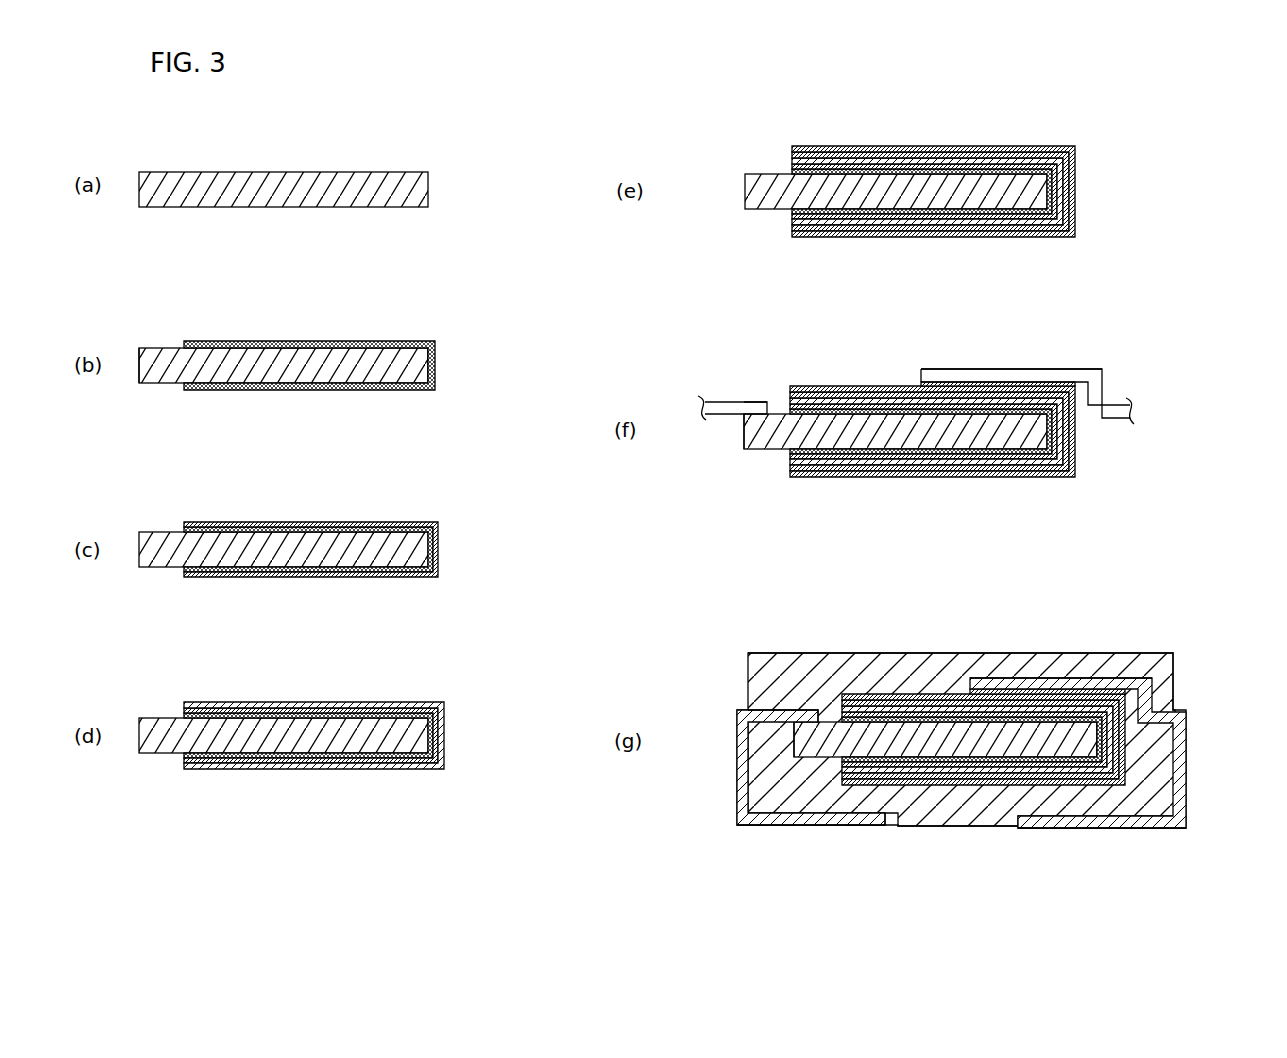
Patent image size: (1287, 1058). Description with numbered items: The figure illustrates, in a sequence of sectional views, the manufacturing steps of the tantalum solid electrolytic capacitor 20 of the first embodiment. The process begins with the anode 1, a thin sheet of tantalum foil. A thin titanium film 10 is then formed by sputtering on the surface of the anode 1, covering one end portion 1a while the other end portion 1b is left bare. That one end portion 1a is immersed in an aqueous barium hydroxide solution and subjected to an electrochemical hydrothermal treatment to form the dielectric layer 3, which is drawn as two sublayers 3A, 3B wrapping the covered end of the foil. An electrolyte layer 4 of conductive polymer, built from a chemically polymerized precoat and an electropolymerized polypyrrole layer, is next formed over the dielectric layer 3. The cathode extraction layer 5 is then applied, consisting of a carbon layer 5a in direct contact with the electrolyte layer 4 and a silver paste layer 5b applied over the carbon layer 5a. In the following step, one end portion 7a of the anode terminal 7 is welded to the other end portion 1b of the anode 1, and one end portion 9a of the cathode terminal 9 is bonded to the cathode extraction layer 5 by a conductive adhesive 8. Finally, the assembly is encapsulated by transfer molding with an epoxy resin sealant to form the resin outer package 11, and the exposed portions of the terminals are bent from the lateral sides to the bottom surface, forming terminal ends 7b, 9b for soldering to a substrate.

The anode 1 is at (418, 186).
The one end portion of the anode 1a is at (368, 360).
The other end portion of the anode 1b is at (145, 353).
The thin titanium film 10 is at (323, 347).
The dielectric layer 3 is at (645, 435).
The first solid electrolyte layer 3A is at (255, 532).
The second solid electrolyte layer 3B is at (320, 522).
The electrolyte layer 4 is at (345, 703).
The cathode extraction layer 5 is at (950, 490).
The carbon layer 5a is at (1000, 155).
The silver paste layer 5b is at (1067, 148).
The anode terminal 7 is at (715, 407).
The one end portion of the anode terminal 7a is at (752, 405).
The terminal end of the anode terminal 7b is at (832, 823).
The conductive adhesive 8 is at (937, 382).
The cathode terminal 9 is at (1063, 378).
The one end portion of the cathode terminal 9a is at (982, 375).
The terminal end of the cathode terminal 9b is at (1093, 823).
The resin outer package 11 is at (755, 670).
The tantalum solid electrolytic capacitor 20 is at (1158, 625).